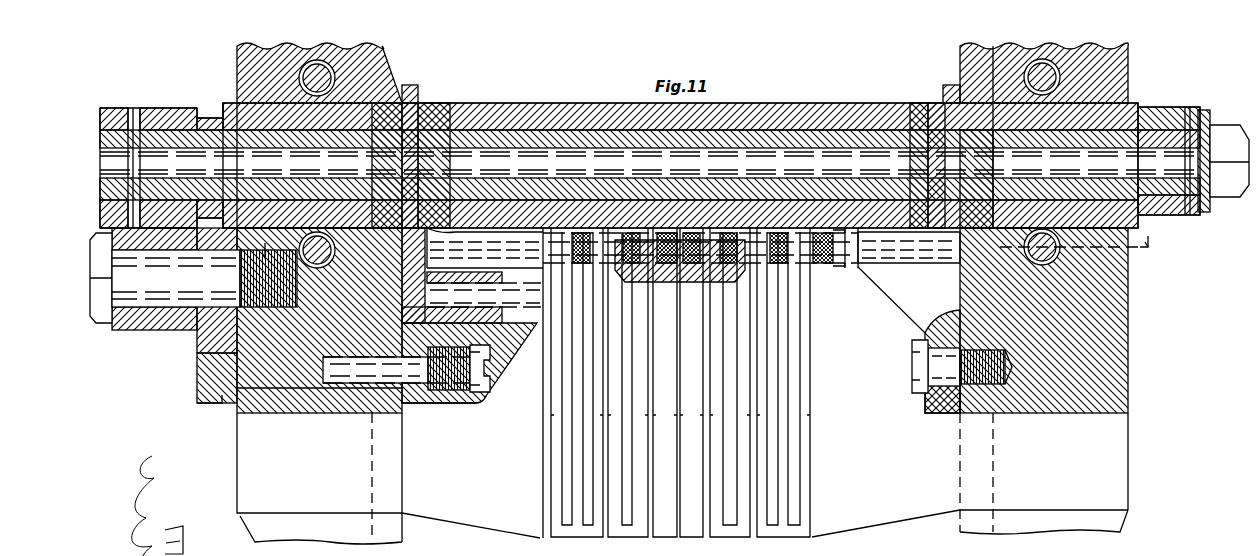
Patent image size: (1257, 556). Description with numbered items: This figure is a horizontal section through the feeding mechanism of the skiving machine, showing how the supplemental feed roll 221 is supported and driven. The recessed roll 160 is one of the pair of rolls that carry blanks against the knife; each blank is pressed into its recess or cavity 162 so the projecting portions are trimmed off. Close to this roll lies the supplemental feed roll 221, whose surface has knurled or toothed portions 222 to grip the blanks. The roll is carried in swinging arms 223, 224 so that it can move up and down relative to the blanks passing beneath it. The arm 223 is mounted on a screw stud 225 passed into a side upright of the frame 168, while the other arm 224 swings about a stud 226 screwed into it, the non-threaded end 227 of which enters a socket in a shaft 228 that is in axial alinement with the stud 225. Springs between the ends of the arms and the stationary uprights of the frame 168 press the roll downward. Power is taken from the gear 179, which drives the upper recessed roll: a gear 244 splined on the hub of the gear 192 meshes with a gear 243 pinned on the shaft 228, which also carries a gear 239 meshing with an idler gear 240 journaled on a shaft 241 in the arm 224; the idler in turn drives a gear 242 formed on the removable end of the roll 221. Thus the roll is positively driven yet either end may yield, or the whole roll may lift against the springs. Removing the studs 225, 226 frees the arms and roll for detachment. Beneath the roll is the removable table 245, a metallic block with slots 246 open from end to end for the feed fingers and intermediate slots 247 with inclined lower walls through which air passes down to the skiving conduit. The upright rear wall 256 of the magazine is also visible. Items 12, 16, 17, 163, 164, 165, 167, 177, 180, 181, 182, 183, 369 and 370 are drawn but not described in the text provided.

The section line 12 is at (757, 239).
The threaded portions 16 is at (691, 248).
The shoulder 17 is at (845, 251).
The recessed roll 160 is at (845, 99).
The recess or cavity 162 is at (715, 128).
The spindle 163 is at (650, 163).
The bearing cap 164 is at (397, 82).
The spindle end sleeve 165 is at (1098, 137).
The base 167 is at (1066, 484).
The frame 168 is at (1112, 323).
The nut 177 is at (1222, 132).
The gear 179 is at (176, 110).
The ring 180 is at (210, 118).
The lock nut 181 is at (109, 112).
The washer 182 is at (132, 112).
The sleeve ring 183 is at (142, 110).
The gear 192 is at (163, 330).
The supplemental feed roll 221 is at (852, 266).
The knurled or toothed portions 222 is at (820, 266).
The swinging arm 223 is at (905, 305).
The swinging arm 224 is at (525, 340).
The screw stud 225 is at (935, 372).
The stud 226 is at (456, 396).
The non-threaded end 227 is at (350, 372).
The shaft 228 is at (281, 383).
The gear 239 is at (420, 404).
The idler gear 240 is at (423, 405).
The shaft 241 is at (485, 289).
The gear 242 is at (642, 248).
The gear 243 is at (215, 408).
The gear 244 is at (198, 338).
The table 245 is at (483, 518).
The slots 246 is at (812, 463).
The slots 247 is at (790, 494).
The upright rear wall 256 is at (667, 283).
The ring 369 is at (1187, 216).
The collar 370 is at (1208, 208).